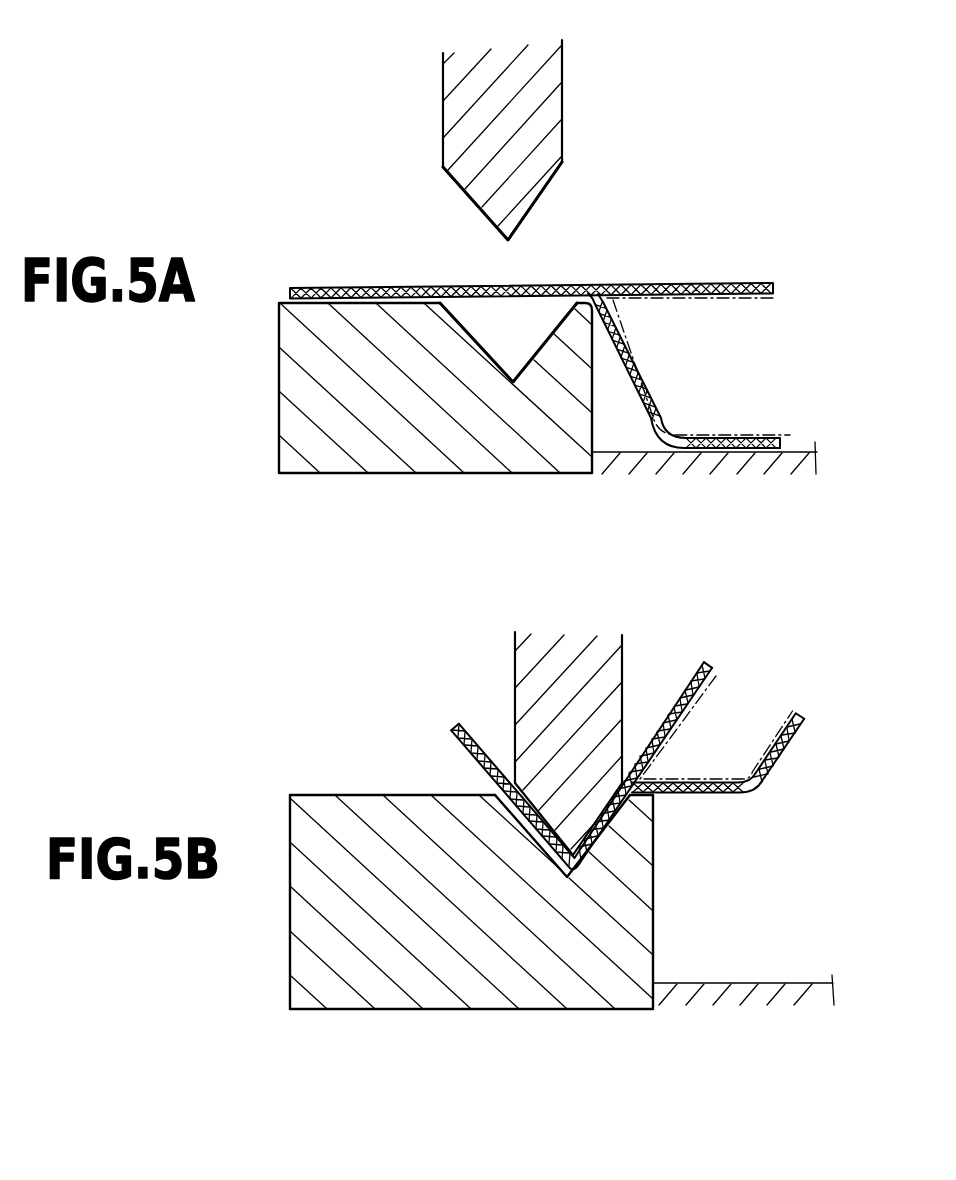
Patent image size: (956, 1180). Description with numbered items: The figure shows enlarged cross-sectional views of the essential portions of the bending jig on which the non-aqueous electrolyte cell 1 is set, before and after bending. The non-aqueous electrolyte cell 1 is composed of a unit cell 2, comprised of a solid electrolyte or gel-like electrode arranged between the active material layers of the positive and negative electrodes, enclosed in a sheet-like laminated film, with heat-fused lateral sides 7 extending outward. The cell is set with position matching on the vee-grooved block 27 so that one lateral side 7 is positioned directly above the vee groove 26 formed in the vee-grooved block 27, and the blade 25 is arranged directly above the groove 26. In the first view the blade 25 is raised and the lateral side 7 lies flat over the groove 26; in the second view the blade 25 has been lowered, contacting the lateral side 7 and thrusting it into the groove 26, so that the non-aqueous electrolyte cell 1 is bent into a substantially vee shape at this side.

In FIG. 5A, the non-aqueous electrolyte cell 1 is at (711, 263).
In FIG. 5B, the non-aqueous electrolyte cell 1 is at (796, 784).
In FIG. 5A, the unit cell 2 is at (657, 300).
In FIG. 5B, the unit cell 2 is at (780, 757).
In FIG. 5A, the lateral side 7 is at (512, 283).
In FIG. 5B, the lateral side 7 is at (451, 727).
In FIG. 5A, the blade 25 is at (552, 107).
In FIG. 5B, the blade 25 is at (524, 676).
In FIG. 5A, the vee groove 26 is at (533, 335).
In FIG. 5B, the vee groove 26 is at (605, 826).
In FIG. 5A, the vee-grooved block 27 is at (432, 455).
In FIG. 5B, the vee-grooved block 27 is at (434, 995).